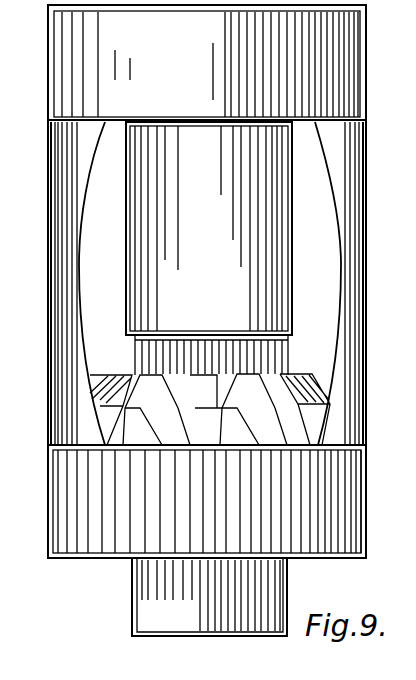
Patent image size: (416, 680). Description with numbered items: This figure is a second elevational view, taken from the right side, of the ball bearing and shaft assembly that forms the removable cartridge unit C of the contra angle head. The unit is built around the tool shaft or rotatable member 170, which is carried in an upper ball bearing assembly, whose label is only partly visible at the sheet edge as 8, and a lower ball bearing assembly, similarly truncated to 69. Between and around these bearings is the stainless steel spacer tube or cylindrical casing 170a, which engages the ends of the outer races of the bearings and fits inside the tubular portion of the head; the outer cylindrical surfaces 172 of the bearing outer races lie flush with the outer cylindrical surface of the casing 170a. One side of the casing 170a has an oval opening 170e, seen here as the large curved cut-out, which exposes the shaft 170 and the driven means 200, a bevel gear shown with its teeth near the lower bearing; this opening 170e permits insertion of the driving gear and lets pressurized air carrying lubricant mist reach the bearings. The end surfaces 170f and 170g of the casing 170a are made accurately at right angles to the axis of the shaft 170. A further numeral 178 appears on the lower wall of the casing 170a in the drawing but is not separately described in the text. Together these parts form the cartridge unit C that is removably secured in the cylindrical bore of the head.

The upper housing block 8 is at (47, 57).
The outer cylindrical surfaces 172 is at (56, 102).
The stainless steel spacer tube 170a is at (75, 155).
The oval opening 170e is at (83, 257).
The side wall lower portion 178 is at (50, 353).
The end surface 170f is at (105, 122).
The end surface 170g is at (105, 445).
The cartridge unit C is at (42, 280).
The shaft 170 is at (315, 265).
The bevel gear 200 is at (298, 367).
The lower housing block 69 is at (47, 503).